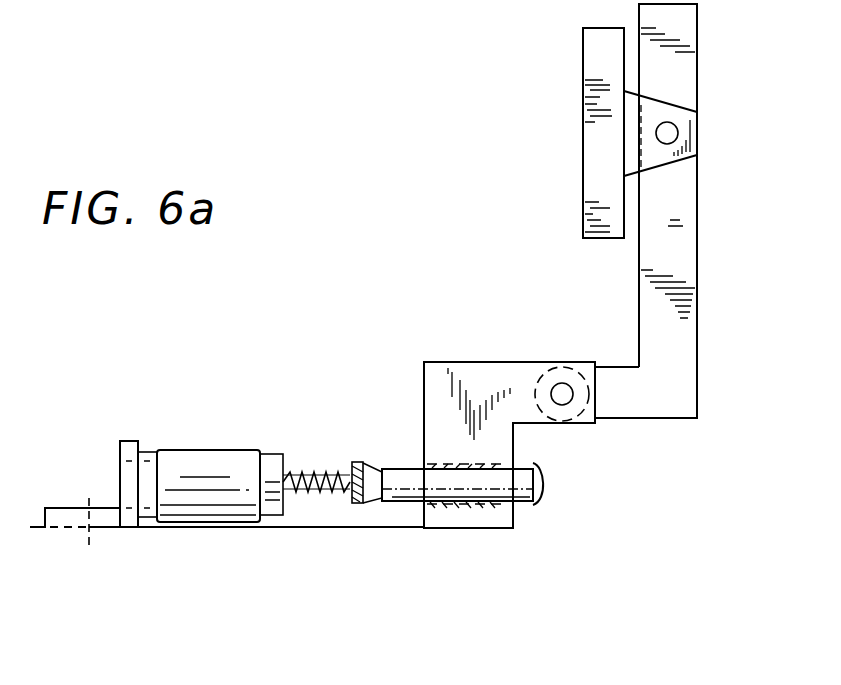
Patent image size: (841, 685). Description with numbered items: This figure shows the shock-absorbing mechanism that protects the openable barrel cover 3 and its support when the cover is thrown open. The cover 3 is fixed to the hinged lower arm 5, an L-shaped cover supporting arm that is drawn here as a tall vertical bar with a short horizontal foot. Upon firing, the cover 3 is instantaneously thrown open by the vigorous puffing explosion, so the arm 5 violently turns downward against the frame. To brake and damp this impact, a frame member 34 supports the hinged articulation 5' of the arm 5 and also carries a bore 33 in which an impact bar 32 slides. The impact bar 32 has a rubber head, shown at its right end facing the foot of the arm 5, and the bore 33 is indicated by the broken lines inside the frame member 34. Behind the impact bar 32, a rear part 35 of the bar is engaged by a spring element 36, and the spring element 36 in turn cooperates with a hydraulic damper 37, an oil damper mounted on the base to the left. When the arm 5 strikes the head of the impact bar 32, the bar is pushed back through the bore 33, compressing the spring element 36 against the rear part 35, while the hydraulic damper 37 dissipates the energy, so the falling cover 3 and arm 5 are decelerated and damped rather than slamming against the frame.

The openable barrel cover 3 is at (590, 162).
The hinged lower arm 5 is at (647, 232).
The hinged articulation 5' is at (550, 363).
The impact bar 32 is at (522, 483).
The bore 33 is at (483, 507).
The frame member 34 is at (427, 402).
The rear part of impact bar 35 is at (372, 505).
The spring element 36 is at (332, 463).
The hydraulic damper 37 is at (270, 455).